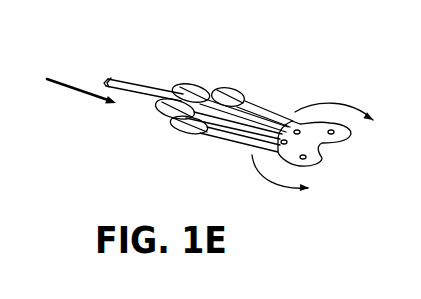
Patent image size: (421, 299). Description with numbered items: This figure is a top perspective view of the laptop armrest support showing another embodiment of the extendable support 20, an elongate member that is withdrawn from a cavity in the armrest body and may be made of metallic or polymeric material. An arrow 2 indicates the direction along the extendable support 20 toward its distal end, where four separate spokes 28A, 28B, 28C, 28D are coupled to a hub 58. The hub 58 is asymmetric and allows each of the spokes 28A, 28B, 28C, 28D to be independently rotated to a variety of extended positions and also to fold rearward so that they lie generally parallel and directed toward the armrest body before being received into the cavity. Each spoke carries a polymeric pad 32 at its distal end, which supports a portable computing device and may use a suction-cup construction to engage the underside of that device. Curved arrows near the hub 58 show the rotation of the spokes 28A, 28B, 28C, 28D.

The insertion direction arrow 2 is at (58, 91).
The extendable support 20 is at (135, 80).
The polymeric pads 32 is at (195, 88).
The spoke 28A is at (217, 90).
The spoke 28B is at (263, 108).
The spoke 28C is at (225, 141).
The spoke 28D is at (188, 131).
The hub 58 is at (320, 145).